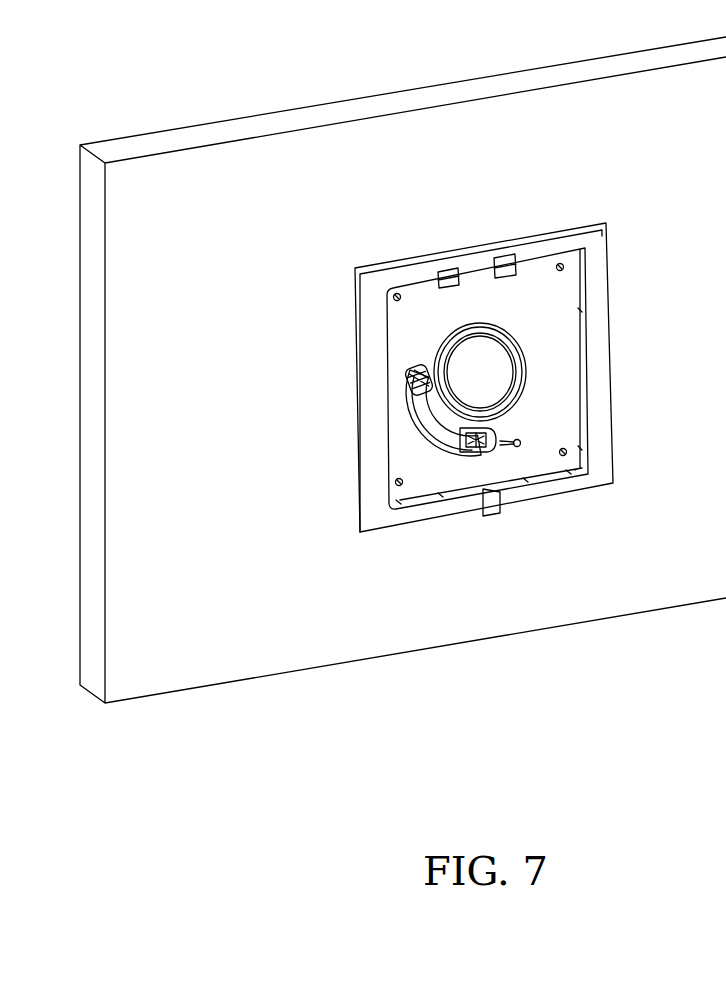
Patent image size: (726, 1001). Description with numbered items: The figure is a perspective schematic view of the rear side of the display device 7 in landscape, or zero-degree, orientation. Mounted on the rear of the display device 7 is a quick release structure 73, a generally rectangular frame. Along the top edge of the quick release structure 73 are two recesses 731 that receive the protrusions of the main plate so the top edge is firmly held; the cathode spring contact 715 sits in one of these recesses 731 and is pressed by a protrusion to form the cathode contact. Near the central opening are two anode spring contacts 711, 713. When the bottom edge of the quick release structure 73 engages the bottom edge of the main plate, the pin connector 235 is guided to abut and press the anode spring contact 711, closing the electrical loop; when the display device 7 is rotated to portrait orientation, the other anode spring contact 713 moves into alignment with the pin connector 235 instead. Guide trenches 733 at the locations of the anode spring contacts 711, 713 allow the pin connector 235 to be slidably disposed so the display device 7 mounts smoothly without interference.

The display device 7 is at (262, 125).
The quick release structure 73 is at (612, 347).
The recess 731 is at (448, 270).
The cathode spring contact 715 is at (507, 253).
The guide trench 733 is at (420, 372).
The anode spring contact 713 is at (412, 388).
The pin connector 235 is at (522, 440).
The anode spring contact 711 is at (483, 487).